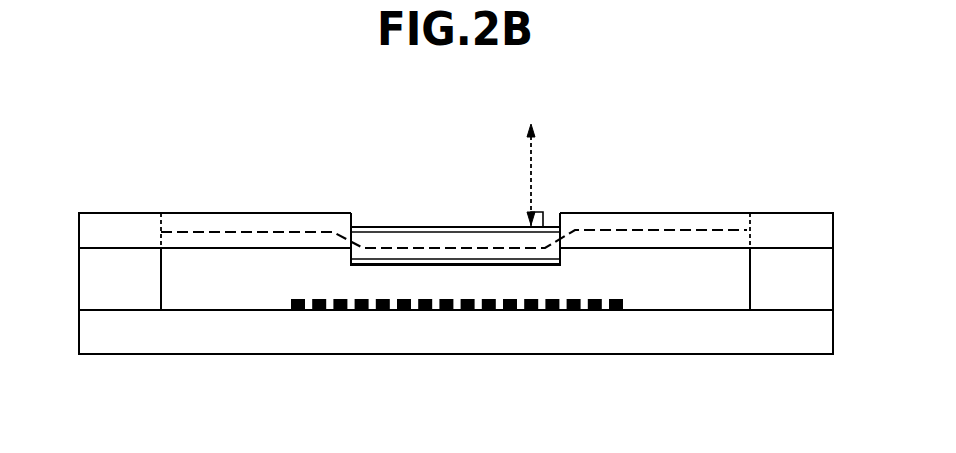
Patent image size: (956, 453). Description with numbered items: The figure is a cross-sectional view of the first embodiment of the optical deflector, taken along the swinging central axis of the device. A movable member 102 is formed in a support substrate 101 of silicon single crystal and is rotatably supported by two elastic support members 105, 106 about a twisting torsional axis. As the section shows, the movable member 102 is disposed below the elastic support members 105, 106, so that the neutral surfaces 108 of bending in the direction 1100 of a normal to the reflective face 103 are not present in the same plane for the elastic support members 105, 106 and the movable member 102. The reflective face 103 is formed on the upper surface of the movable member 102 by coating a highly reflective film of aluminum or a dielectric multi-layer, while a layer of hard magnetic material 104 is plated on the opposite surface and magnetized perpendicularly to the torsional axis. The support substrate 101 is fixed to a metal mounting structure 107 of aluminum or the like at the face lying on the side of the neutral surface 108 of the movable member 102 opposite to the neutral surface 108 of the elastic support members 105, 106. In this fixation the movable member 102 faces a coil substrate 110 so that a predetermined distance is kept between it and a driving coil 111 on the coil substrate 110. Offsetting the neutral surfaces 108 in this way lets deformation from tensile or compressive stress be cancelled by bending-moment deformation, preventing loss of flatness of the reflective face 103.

The support substrate 101 is at (782, 232).
The movable member 102 is at (476, 240).
The reflective face 103 is at (399, 227).
The hard magnetic material 104 is at (497, 265).
The elastic support member 105 is at (238, 213).
The elastic support member 106 is at (658, 213).
The mounting structure 107 is at (792, 275).
The neutral surface 108 is at (283, 232).
The coil substrate 110 is at (303, 329).
The driving coil 111 is at (618, 311).
The direction 1100 is at (531, 163).